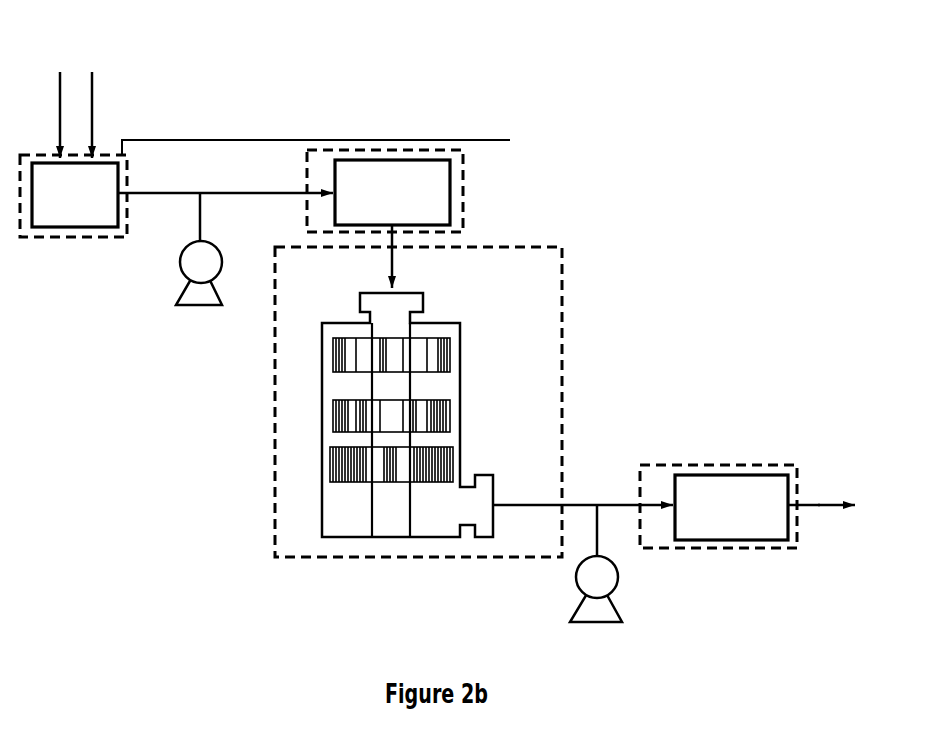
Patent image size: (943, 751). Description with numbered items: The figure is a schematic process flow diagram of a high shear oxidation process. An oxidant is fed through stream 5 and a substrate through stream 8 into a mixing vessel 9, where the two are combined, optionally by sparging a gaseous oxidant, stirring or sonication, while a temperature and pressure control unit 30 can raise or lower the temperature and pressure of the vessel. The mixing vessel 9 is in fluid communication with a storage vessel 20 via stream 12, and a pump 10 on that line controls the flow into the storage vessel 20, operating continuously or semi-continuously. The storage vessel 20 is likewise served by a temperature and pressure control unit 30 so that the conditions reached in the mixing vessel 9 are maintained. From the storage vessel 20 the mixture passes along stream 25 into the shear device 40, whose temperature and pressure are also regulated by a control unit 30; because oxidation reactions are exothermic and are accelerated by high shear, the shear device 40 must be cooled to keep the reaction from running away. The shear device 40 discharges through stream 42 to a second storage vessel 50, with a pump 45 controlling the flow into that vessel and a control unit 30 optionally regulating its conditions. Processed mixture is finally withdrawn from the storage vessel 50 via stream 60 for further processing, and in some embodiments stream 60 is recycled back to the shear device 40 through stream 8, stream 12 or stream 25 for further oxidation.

The oxidant stream 5 is at (58, 95).
The substrate stream 8 is at (94, 95).
The mixing vessel 9 is at (73, 196).
The pump 10 is at (180, 260).
The stream 12 is at (225, 176).
The storage vessel 20 is at (385, 191).
The stream 25 is at (418, 257).
The temperature and pressure control unit 30 is at (730, 465).
The shear device 40 is at (450, 320).
The stream 42 is at (796, 485).
The pump 45 is at (575, 573).
The storage vessel 50 is at (718, 506).
The stream 60 is at (818, 505).